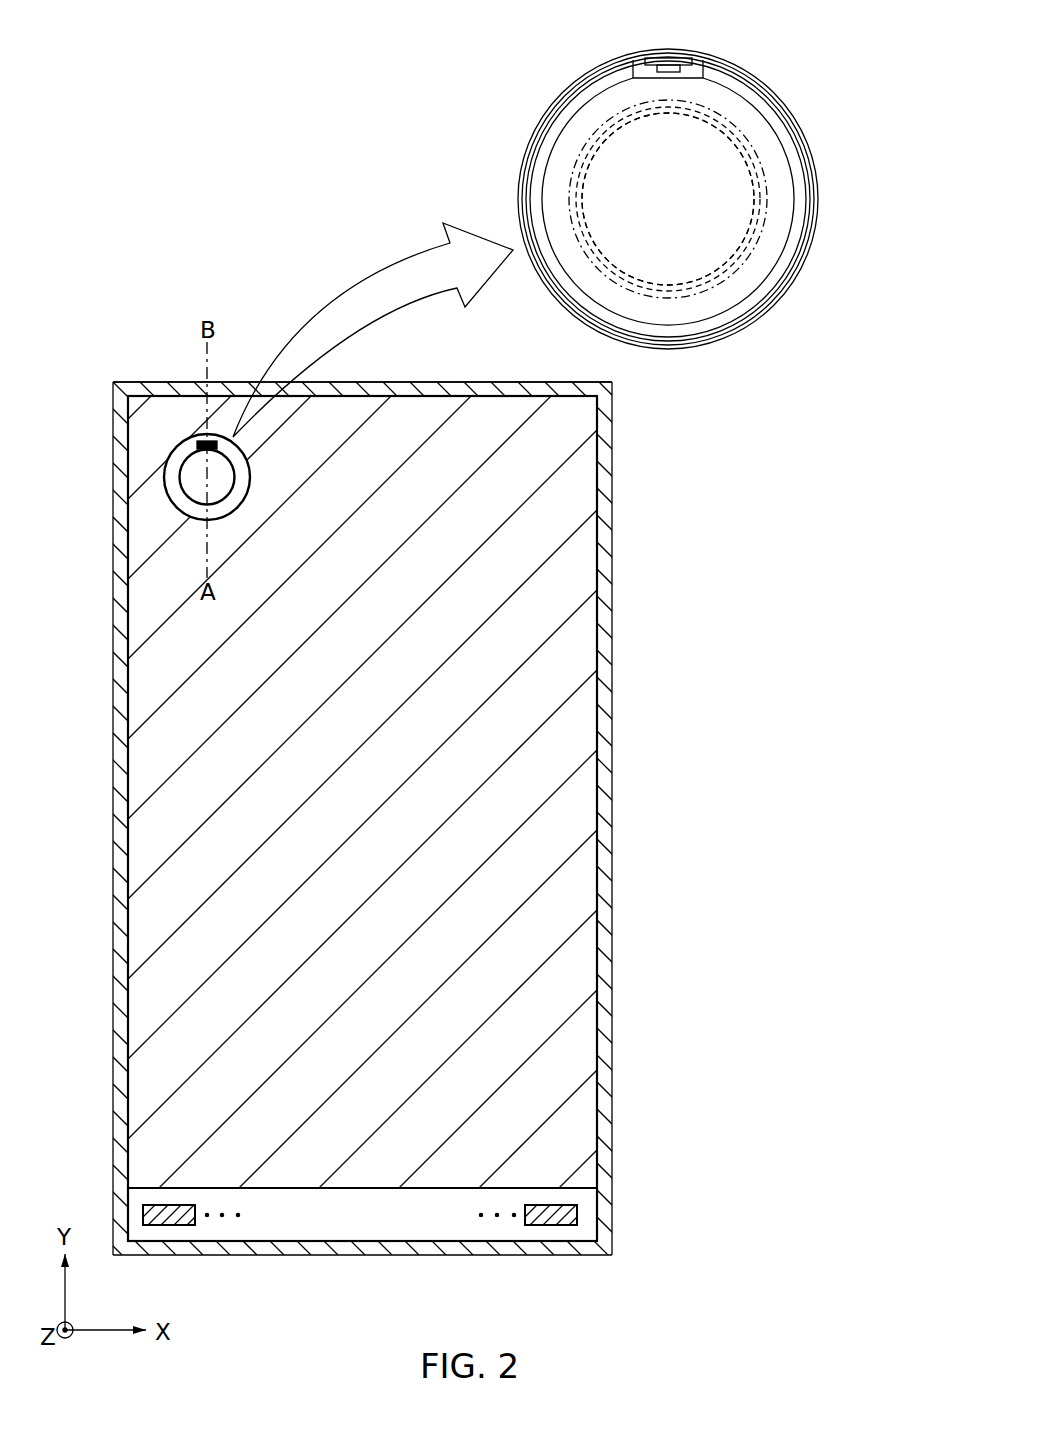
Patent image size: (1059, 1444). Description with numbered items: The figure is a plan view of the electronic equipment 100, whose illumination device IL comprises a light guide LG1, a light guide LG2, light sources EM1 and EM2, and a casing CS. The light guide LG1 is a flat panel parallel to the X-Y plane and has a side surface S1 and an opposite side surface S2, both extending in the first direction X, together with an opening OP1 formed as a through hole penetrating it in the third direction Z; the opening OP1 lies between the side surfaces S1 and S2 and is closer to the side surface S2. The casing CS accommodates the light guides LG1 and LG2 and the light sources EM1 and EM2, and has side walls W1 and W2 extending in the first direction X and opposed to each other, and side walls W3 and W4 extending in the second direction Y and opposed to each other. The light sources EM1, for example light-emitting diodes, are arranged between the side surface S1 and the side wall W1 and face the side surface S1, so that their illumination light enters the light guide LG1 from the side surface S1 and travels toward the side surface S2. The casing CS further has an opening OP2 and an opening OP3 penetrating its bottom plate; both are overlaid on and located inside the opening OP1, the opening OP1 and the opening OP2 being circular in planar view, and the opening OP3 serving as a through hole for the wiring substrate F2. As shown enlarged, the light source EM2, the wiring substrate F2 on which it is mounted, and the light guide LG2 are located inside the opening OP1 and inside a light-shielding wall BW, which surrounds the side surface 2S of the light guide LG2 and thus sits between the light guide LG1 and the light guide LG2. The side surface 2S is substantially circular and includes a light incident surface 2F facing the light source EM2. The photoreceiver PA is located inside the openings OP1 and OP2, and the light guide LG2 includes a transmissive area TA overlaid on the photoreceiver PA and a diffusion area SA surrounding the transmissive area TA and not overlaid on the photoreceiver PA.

The electronic equipment 100 is at (646, 938).
The illumination device IL is at (646, 544).
The casing CS is at (599, 1258).
The light guide LG1 is at (583, 636).
The light guide LG2 is at (787, 140).
The side wall W1 is at (306, 1250).
The side wall W2 is at (457, 388).
The side wall W3 is at (118, 758).
The side wall W4 is at (607, 780).
The side surface S1 is at (447, 1193).
The side surface S2 is at (518, 381).
The side surface 2S is at (779, 120).
The light incident surface 2F is at (638, 70).
The wiring substrate F2 is at (678, 57).
The light source EM1 is at (168, 1231).
The light source EM2 is at (692, 66).
The opening OP1 is at (190, 492).
The opening OP2 is at (236, 471).
The opening OP3 is at (203, 441).
The light-shielding wall BW is at (772, 97).
The photoreceiver PA is at (755, 200).
The diffusion area SA is at (774, 230).
The transmissive area TA is at (723, 233).